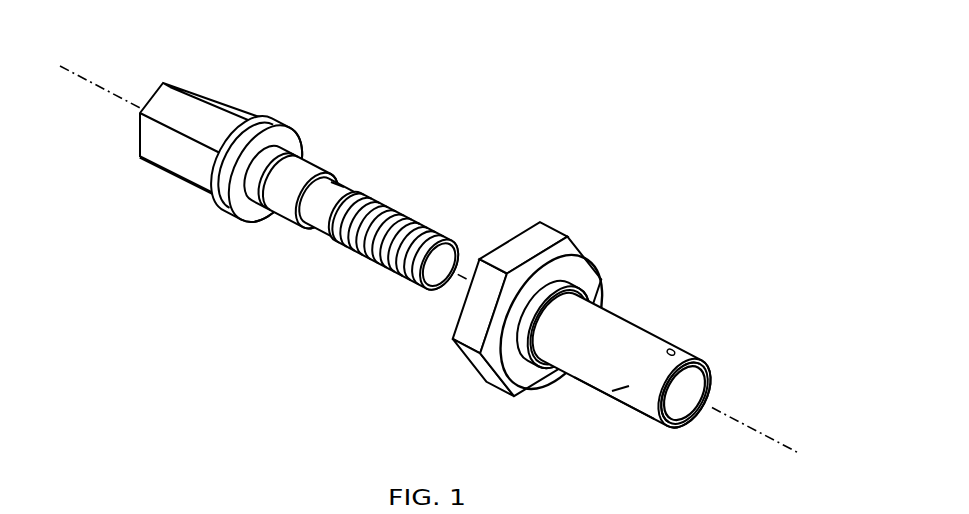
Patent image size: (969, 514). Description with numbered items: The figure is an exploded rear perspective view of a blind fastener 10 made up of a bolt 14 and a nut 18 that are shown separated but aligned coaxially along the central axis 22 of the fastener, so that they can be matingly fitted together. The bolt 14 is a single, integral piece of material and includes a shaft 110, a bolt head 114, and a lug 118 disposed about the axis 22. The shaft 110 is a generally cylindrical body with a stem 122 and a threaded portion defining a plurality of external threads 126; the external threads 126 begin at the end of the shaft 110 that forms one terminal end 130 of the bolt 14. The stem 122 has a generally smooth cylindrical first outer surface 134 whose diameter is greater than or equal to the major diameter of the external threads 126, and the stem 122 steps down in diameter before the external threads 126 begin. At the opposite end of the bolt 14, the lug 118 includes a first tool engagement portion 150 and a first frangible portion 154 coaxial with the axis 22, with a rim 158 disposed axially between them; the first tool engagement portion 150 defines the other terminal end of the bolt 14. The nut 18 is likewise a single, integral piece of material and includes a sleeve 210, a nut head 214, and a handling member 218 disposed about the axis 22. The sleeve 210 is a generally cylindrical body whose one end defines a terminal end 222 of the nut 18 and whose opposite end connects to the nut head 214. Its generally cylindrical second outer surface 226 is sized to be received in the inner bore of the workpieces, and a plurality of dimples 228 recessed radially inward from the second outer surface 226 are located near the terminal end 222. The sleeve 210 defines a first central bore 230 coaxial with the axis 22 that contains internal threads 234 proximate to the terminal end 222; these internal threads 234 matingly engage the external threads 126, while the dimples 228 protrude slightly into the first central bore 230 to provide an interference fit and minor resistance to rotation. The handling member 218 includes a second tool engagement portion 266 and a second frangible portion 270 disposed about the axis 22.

The blind fastener 10 is at (599, 78).
The bolt 14 is at (298, 166).
The nut 18 is at (593, 310).
The central axis 22 is at (87, 70).
The shaft 110 is at (417, 217).
The bolt head 114 is at (359, 157).
The lug 118 is at (217, 153).
The stem 122 is at (352, 180).
The external threads 126 is at (409, 212).
The terminal end 130 is at (412, 283).
The first outer surface 134 is at (345, 149).
The first tool engagement portion 150 is at (152, 143).
The first frangible portion 154 is at (288, 209).
The rim 158 is at (227, 205).
The sleeve 210 is at (658, 359).
The nut head 214 is at (594, 292).
The handling member 218 is at (508, 301).
The terminal end 222 is at (699, 367).
The second outer surface 226 is at (618, 396).
The dimples 228 is at (677, 350).
The first central bore 230 is at (663, 426).
The internal threads 234 is at (689, 408).
The second tool engagement portion 266 is at (511, 300).
The second frangible portion 270 is at (543, 318).